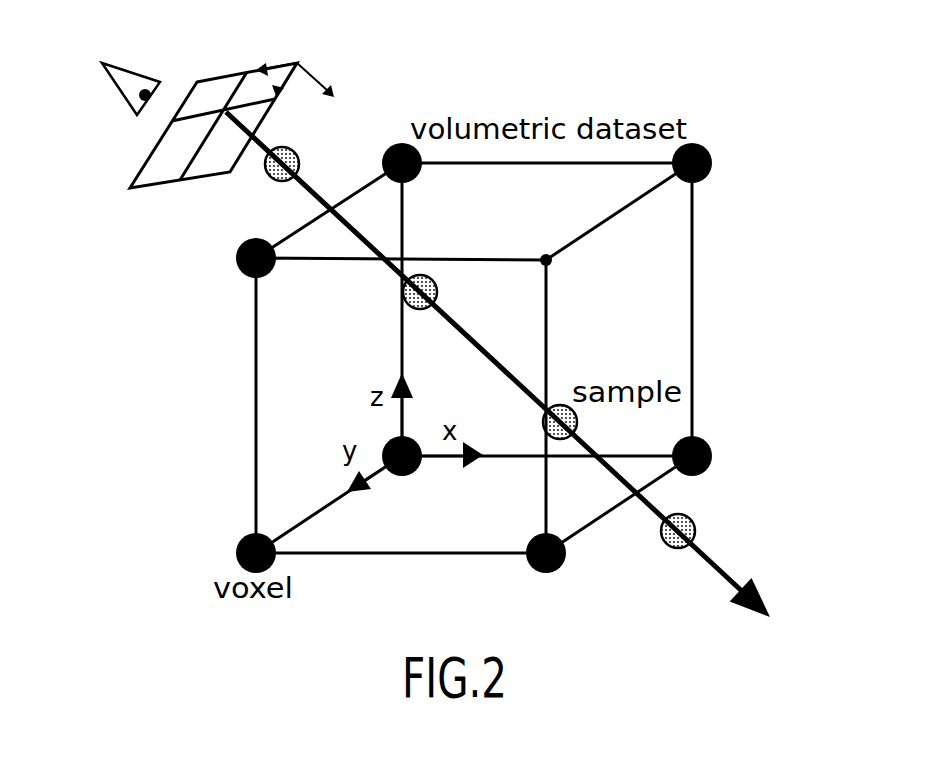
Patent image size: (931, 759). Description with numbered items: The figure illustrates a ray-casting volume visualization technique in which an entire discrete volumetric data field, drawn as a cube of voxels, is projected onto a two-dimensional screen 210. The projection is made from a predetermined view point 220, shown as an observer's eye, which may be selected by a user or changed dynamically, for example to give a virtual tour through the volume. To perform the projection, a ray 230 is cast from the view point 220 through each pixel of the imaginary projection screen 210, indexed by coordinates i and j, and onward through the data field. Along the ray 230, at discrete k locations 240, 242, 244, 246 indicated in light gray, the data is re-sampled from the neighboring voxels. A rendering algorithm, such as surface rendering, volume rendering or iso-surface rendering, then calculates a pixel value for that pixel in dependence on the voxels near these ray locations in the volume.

The two-dimensional screen 210 is at (143, 165).
The view point 220 is at (112, 78).
The ray 230 is at (529, 364).
The k location 240 is at (298, 156).
The k location 242 is at (438, 295).
The k location 244 is at (578, 425).
The k location 246 is at (695, 518).